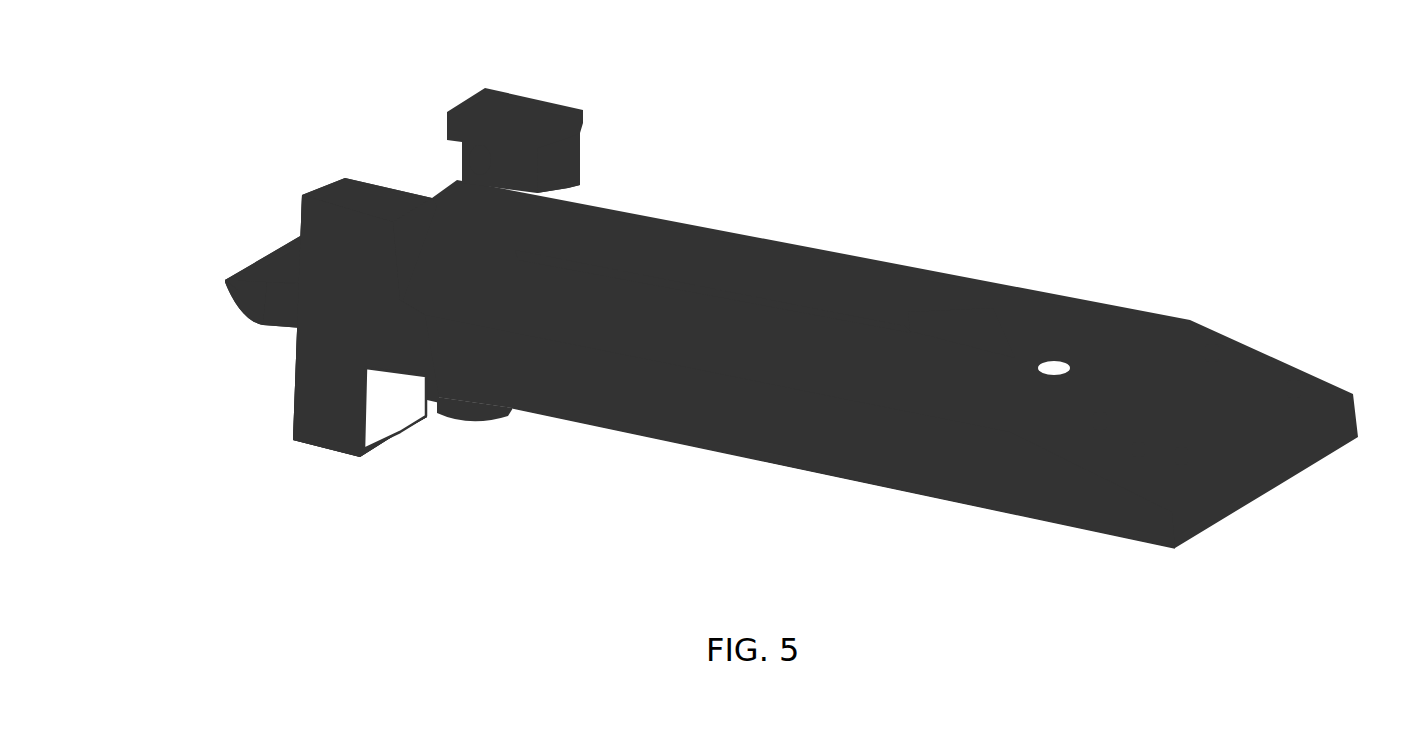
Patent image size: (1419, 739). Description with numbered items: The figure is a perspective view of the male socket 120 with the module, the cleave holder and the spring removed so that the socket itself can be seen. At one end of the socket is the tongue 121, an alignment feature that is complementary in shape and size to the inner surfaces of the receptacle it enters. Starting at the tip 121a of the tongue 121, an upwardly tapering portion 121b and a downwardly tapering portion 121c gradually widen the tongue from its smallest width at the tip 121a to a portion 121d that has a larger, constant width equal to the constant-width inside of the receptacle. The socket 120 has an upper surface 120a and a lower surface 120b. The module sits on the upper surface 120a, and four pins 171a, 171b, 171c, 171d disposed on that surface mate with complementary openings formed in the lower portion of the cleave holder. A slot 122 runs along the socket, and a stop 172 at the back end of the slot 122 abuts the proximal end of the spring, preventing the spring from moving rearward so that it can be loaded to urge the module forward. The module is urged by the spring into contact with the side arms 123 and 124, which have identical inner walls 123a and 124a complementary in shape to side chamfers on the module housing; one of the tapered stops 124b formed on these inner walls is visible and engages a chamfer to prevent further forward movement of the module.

The male socket 120 is at (825, 316).
The upper surface 120a is at (925, 371).
The lower surface 120b is at (604, 428).
The tongue 121 is at (212, 303).
The tip 121a is at (225, 279).
The tapering portion 121b is at (272, 243).
The tapering portion 121c is at (238, 304).
The constant-width portion 121d is at (277, 333).
The slot 122 is at (768, 304).
The side arm 123 is at (376, 285).
The inner wall 123a is at (402, 252).
The side arm 124 is at (535, 116).
The inner wall 124a is at (552, 163).
The tapered stop 124b is at (490, 158).
The pin 171a is at (1100, 410).
The pin 171b is at (1212, 345).
The pin 171c is at (1292, 380).
The pin 171d is at (1180, 455).
The stop 172 is at (897, 310).